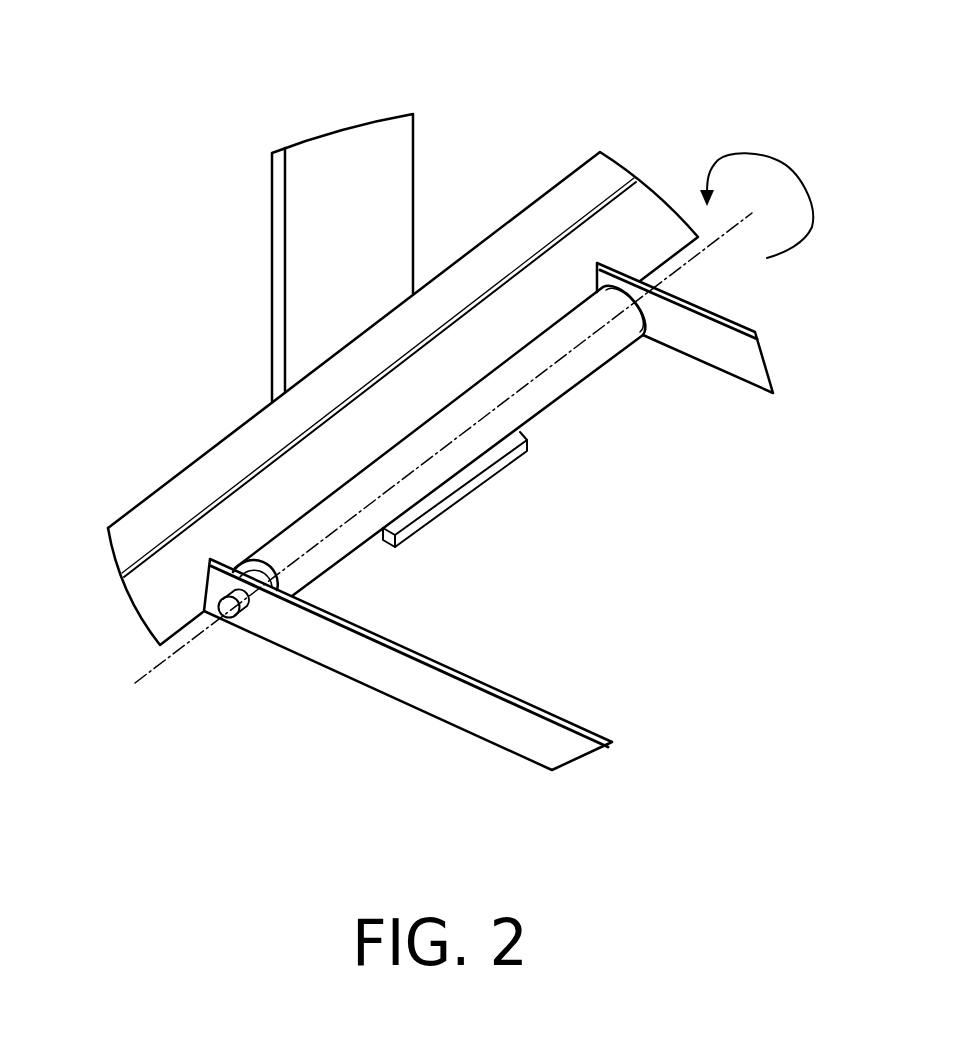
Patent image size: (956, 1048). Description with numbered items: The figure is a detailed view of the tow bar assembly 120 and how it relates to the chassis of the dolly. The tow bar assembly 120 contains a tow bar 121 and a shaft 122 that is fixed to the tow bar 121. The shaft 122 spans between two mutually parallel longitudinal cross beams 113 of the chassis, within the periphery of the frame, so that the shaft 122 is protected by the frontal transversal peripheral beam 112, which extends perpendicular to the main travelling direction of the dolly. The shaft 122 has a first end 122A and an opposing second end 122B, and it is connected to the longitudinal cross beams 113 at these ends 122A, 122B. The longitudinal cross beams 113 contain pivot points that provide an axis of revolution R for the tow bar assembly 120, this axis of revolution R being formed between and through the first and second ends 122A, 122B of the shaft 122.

The tow bar assembly 120 is at (250, 294).
The tow bar 121 is at (321, 152).
The transversal peripheral beam 112 is at (193, 476).
The shaft 122 is at (340, 556).
The first end 122A is at (660, 340).
The second end 122B is at (250, 634).
The longitudinal cross beam 113 is at (752, 363).
The axis of revolution R is at (172, 655).